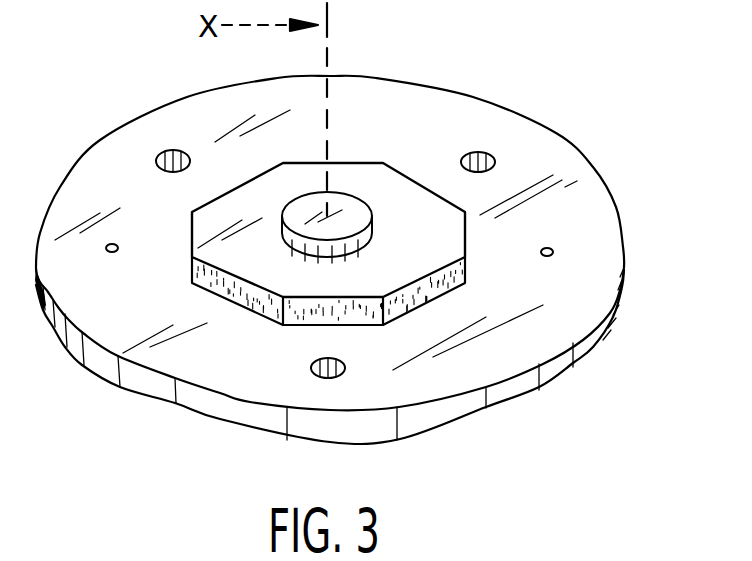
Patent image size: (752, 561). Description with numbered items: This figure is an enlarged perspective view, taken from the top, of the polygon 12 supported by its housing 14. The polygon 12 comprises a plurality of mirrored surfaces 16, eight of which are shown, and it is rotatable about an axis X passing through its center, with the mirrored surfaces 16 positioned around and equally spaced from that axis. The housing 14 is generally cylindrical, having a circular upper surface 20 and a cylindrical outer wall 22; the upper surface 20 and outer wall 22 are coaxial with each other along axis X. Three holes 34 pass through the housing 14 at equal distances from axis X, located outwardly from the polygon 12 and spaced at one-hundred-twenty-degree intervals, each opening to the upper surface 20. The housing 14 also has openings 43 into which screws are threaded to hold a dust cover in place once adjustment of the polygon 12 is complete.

The polygon 12 is at (178, 287).
The housing 14 is at (474, 96).
The mirrored surfaces 16 is at (258, 306).
The circular upper surface 20 is at (542, 347).
The cylindrical outer wall 22 is at (456, 414).
The holes 34 is at (158, 158).
The openings 43 is at (118, 248).